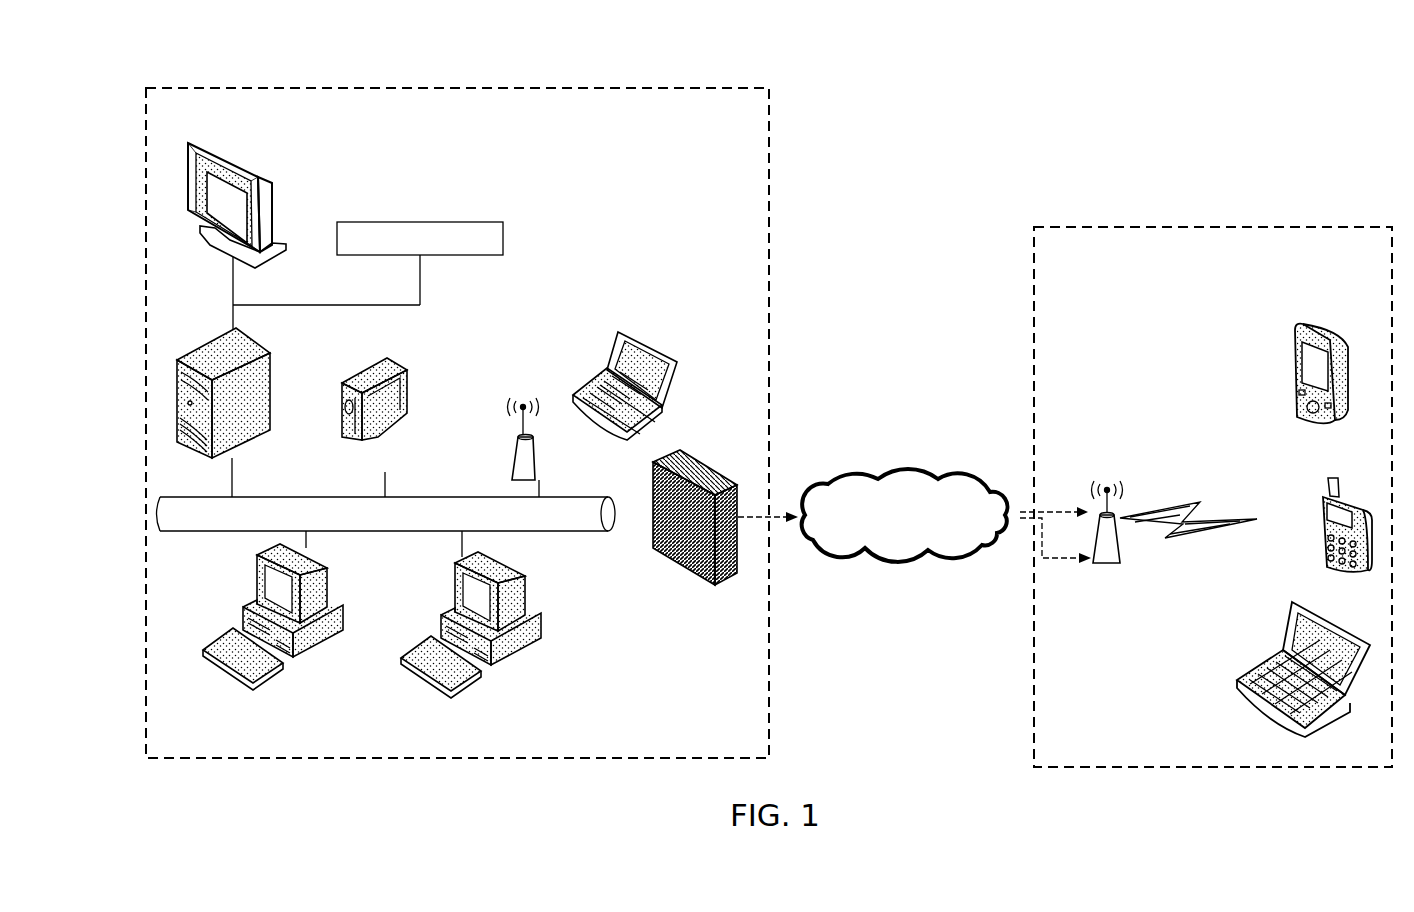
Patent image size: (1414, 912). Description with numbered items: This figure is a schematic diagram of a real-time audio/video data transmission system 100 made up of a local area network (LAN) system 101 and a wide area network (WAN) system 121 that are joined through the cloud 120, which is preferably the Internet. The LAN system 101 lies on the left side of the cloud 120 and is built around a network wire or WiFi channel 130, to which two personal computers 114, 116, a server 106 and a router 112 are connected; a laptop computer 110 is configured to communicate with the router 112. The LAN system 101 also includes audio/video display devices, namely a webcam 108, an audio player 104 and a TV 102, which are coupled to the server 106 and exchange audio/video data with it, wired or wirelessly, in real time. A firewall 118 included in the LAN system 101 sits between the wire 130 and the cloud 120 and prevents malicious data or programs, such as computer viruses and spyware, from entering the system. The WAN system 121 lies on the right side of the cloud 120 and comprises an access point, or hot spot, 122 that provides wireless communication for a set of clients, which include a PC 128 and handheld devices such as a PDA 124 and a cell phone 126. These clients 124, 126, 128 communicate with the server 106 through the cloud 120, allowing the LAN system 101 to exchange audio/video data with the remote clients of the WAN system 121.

The real-time audio/video data transmission system 100 is at (233, 70).
The local area network (LAN) system 101 is at (770, 167).
The TV 102 is at (270, 182).
The audio player 104 is at (455, 222).
The server 106 is at (272, 368).
The webcam 108 is at (404, 362).
The laptop computer 110 is at (648, 342).
The router 112 is at (540, 473).
The personal computer (PC) 114 is at (258, 686).
The personal computer (PC) 116 is at (476, 684).
The firewall 118 is at (687, 568).
The cloud 120 is at (840, 472).
The wide area network (WAN) system 121 is at (1037, 226).
The access point (hot spot) 122 is at (1110, 563).
The PDA 124 is at (1297, 373).
The cell phone 126 is at (1322, 513).
The PC 128 is at (1237, 680).
The network wire or WiFi channel 130 is at (160, 532).